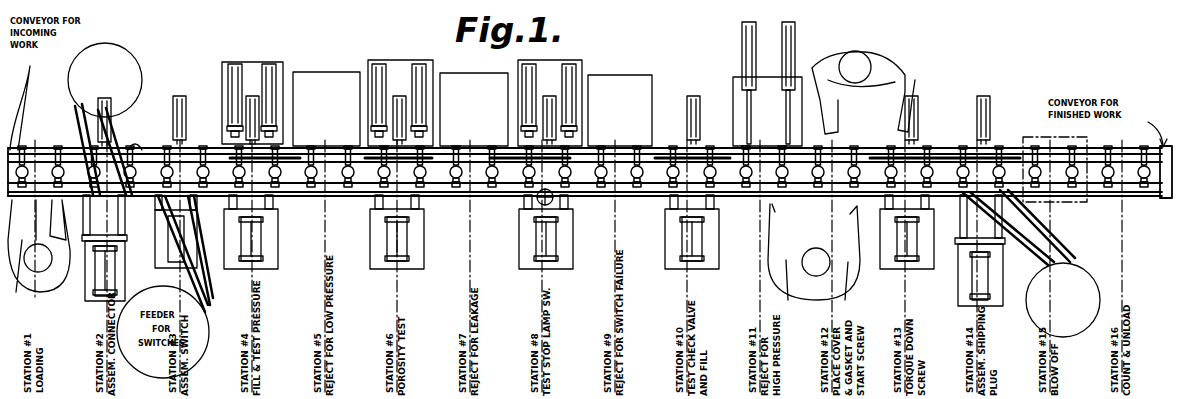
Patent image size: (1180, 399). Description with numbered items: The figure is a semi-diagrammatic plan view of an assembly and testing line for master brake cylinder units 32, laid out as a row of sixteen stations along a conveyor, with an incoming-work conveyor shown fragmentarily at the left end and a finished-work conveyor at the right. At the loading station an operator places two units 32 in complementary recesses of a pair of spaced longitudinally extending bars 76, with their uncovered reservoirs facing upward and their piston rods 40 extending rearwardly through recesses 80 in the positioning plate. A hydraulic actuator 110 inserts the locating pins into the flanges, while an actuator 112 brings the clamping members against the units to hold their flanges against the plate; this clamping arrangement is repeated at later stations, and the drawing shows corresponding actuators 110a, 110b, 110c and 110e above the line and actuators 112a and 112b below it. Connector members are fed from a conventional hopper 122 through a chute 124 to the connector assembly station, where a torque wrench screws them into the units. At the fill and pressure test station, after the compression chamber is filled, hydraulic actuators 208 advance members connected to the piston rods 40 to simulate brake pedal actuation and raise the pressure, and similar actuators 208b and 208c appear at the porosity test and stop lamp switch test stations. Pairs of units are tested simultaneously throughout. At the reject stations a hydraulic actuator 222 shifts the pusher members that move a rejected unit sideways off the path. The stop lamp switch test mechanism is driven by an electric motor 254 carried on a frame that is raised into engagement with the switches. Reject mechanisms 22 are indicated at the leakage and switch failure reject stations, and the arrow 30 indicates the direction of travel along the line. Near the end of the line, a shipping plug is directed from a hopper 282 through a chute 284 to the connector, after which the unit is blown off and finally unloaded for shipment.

The reject mechanism 22 is at (509, 202).
The direction of conveyor travel 30 is at (748, 14).
The master brake cylinder unit 32 is at (54, 148).
The piston rod 40 is at (58, 146).
The longitudinally extending bars 76 is at (283, 205).
The recesses 80 is at (135, 148).
The hydraulic actuator 110 is at (112, 106).
The filling and pressure test cylinder 110a is at (246, 110).
The porosity test cylinder 110b is at (408, 104).
The stop lamp switch test cylinder 110c is at (556, 108).
The check valve test cylinder 110e is at (696, 96).
The actuator 112 is at (116, 286).
The fill and test pressure ram 112a is at (258, 246).
The porosity test ram 112b is at (402, 246).
The hopper 122 is at (140, 72).
The chute 124 is at (32, 72).
The hydraulic actuators 208 is at (240, 85).
The porosity test cylinder unit 208b is at (380, 85).
The stop lamp switch test cylinder unit 208c is at (566, 80).
The hydraulic actuator 222 is at (795, 38).
The electric motor 254 is at (552, 205).
The hopper 282 is at (1098, 256).
The chute 284 is at (1035, 245).